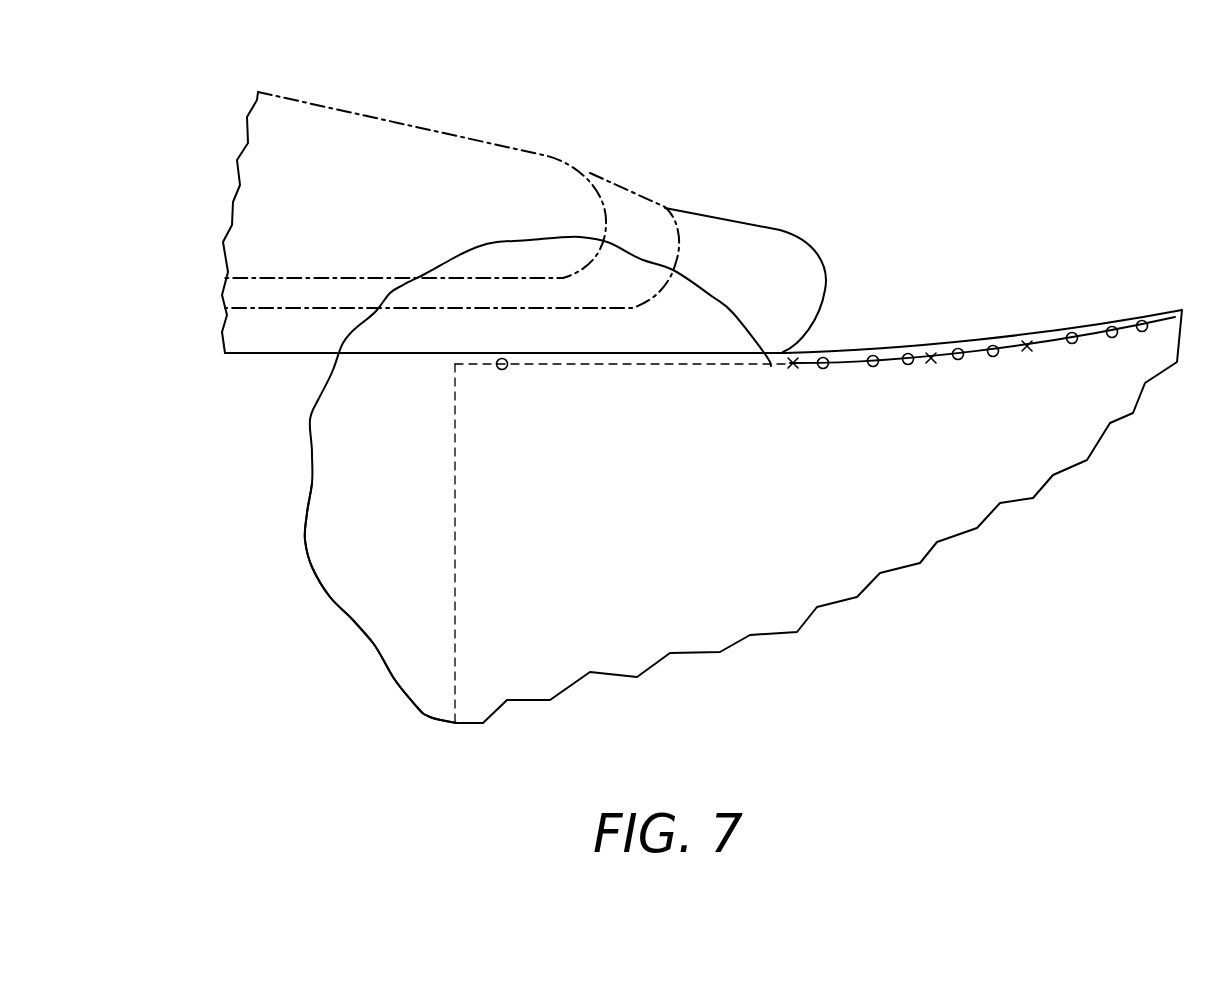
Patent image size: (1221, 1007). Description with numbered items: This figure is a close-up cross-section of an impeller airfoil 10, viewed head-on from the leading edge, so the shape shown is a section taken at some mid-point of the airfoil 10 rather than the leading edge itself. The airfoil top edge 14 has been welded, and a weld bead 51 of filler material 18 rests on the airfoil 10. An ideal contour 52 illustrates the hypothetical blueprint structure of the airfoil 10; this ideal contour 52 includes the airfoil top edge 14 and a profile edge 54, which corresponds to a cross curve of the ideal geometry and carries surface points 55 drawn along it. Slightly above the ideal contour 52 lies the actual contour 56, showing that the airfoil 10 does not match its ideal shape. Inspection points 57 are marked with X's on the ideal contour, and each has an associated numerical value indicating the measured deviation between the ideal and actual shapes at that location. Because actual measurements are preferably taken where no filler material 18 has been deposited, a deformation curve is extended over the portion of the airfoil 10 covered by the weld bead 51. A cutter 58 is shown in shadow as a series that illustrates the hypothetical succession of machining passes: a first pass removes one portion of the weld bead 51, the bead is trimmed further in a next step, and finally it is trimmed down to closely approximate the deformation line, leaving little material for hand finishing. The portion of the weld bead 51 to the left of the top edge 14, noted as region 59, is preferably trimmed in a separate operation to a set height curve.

The airfoil 10 is at (1126, 675).
The airfoil top edge 14 is at (455, 545).
The filler material 18 is at (378, 640).
The weld bead 51 is at (308, 490).
The ideal contour 52 is at (502, 371).
The profile edge 54 is at (1047, 346).
The surface points 55 is at (824, 370).
The actual contour 56 is at (972, 341).
The inspection points 57 is at (794, 372).
The cutter 58 is at (435, 131).
The region 59 is at (383, 530).